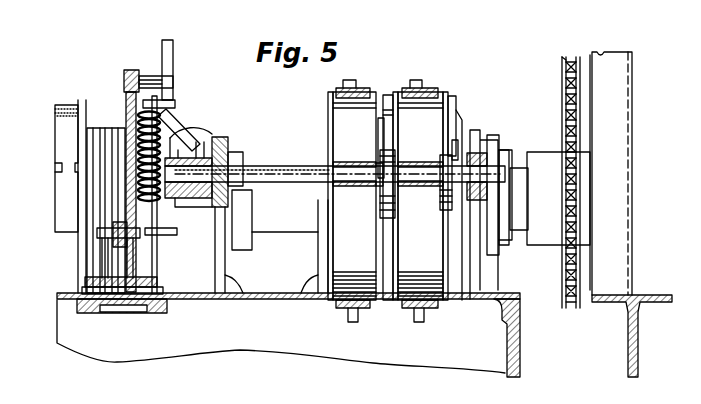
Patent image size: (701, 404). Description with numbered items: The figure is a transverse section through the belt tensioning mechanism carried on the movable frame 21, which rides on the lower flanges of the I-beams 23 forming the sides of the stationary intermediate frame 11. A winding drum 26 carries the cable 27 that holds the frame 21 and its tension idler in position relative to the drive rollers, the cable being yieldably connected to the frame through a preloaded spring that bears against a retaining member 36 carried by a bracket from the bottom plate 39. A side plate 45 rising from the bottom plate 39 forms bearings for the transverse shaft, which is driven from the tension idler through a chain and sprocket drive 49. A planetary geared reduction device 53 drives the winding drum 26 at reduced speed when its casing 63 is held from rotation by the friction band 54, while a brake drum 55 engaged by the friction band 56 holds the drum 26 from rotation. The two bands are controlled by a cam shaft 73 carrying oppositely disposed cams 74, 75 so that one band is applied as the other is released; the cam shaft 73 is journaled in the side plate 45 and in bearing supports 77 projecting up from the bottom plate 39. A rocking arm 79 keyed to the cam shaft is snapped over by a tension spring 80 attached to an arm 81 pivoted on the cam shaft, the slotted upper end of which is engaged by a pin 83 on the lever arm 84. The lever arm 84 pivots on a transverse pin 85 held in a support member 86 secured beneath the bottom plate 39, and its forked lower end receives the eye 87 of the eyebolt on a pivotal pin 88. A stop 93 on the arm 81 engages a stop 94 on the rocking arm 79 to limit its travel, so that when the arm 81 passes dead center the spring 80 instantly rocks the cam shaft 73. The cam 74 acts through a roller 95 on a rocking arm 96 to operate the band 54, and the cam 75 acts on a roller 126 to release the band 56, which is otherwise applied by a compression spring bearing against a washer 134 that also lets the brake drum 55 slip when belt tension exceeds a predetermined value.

The intermediate frame 11 is at (622, 361).
The movable frame 21 is at (375, 360).
The I-beam 23 is at (627, 332).
The winding drum 26 is at (82, 105).
The cable 27 is at (103, 128).
The retaining member 36 is at (102, 246).
The bottom plate 39 is at (190, 300).
The side plate 45 is at (485, 275).
The chain and sprocket drive 49 is at (563, 86).
The planetary geared reduction device 53 is at (452, 98).
The friction band 54 is at (425, 92).
The brake drum 55 is at (330, 112).
The friction band 56 is at (348, 88).
The casing 63 is at (388, 95).
The cam shaft 73 is at (277, 192).
The cam 74 is at (442, 210).
The cam 75 is at (386, 152).
The bearing support 77 is at (300, 293).
The rocking arm 79 is at (180, 210).
The tension spring 80 is at (175, 100).
The arm 81 is at (185, 120).
The pin 83 is at (148, 74).
The lever arm 84 is at (126, 92).
The transverse pin 85 is at (88, 285).
The support member 86 is at (165, 313).
The eye 87 is at (125, 215).
The pivotal pin 88 is at (97, 232).
The stop 93 is at (195, 136).
The stop 94 is at (182, 202).
The roller 95 is at (456, 140).
The rocking arm 96 is at (465, 148).
The roller 126 is at (378, 120).
The washer 134 is at (380, 134).